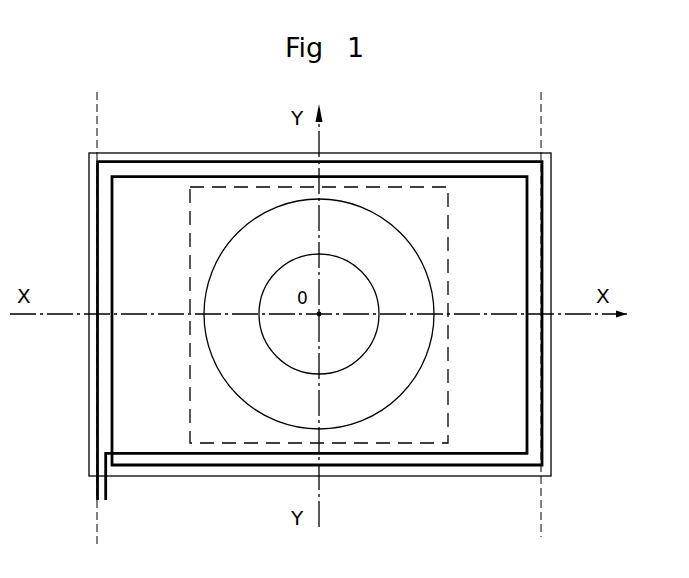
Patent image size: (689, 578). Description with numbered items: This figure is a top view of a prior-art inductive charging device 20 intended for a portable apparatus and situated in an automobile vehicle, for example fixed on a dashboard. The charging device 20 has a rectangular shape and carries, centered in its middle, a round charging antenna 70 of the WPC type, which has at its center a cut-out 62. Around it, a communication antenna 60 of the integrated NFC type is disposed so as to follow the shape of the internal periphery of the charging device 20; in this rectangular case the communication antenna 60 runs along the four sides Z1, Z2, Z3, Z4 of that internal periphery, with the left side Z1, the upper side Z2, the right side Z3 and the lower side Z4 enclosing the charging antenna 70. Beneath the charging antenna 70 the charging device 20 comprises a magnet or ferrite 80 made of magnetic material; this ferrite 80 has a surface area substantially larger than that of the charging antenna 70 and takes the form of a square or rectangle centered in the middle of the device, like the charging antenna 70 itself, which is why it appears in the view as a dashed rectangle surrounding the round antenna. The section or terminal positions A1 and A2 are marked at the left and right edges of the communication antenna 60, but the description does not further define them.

The inductive charging device 20 is at (552, 174).
The communication antenna 60 is at (393, 158).
The cut-out 62 is at (358, 278).
The charging antenna 70 is at (400, 212).
The ferrite 80 is at (455, 333).
The side of the internal periphery Z1 is at (88, 242).
The side of the internal periphery Z2 is at (222, 153).
The side of the internal periphery Z3 is at (551, 397).
The side of the internal periphery Z4 is at (217, 477).
The section line A1 is at (98, 331).
The section line A2 is at (540, 329).